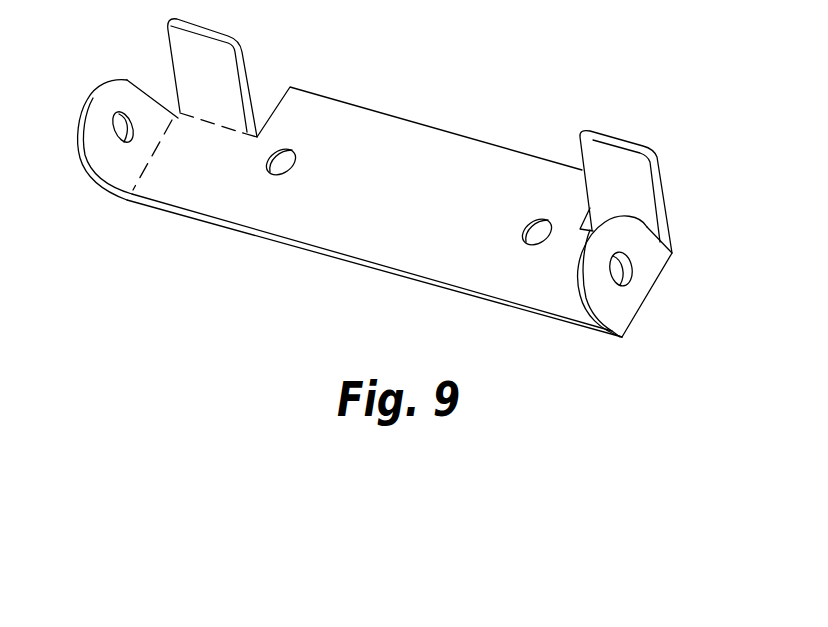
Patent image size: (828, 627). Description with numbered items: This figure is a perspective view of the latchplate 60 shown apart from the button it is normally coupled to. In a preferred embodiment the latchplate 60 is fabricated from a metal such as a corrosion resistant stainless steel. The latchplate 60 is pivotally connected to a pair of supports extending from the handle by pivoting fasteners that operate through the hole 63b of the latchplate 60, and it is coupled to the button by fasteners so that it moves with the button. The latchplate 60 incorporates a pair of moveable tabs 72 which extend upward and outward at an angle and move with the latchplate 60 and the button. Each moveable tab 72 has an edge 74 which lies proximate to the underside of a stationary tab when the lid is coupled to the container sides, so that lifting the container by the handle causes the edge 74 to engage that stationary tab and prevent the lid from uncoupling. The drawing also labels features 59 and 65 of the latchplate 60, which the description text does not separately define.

The mounting lug 59 is at (132, 97).
The latchplate 60 is at (435, 238).
The hole 63b is at (622, 268).
The fastener holes 65 is at (523, 224).
The moveable tab 72 is at (250, 72).
The edge 74 is at (608, 140).